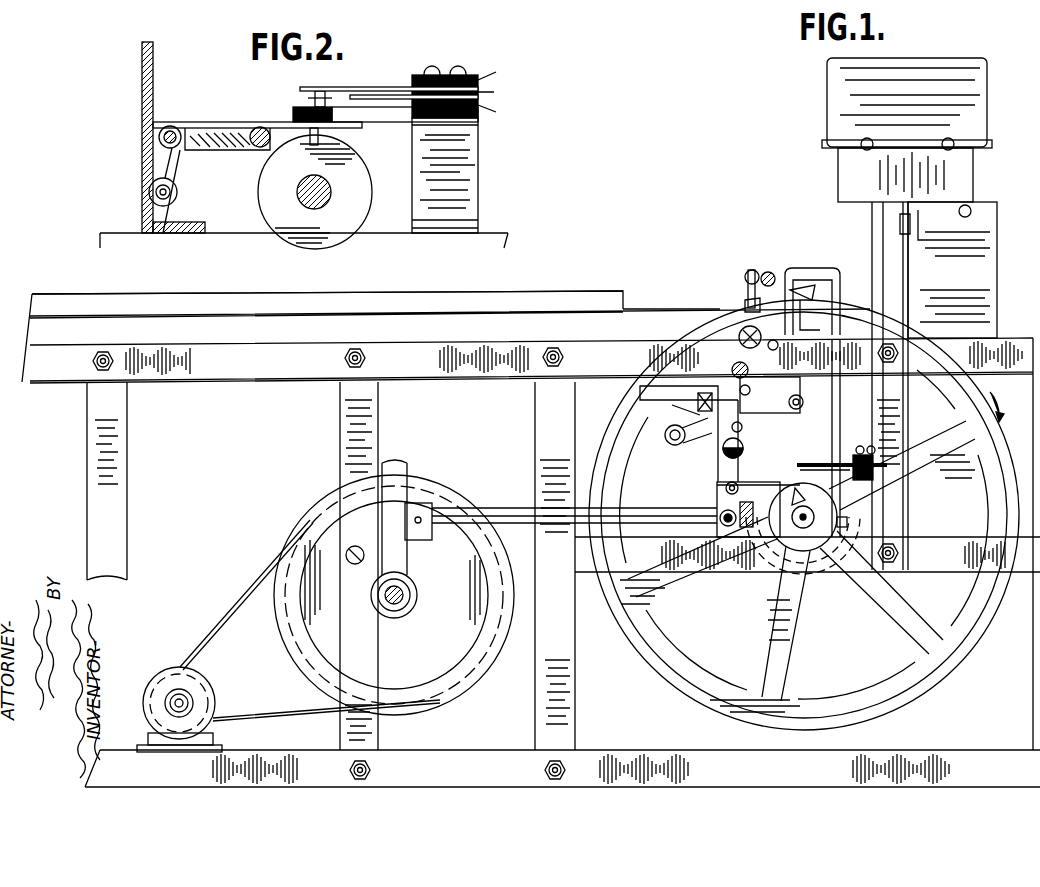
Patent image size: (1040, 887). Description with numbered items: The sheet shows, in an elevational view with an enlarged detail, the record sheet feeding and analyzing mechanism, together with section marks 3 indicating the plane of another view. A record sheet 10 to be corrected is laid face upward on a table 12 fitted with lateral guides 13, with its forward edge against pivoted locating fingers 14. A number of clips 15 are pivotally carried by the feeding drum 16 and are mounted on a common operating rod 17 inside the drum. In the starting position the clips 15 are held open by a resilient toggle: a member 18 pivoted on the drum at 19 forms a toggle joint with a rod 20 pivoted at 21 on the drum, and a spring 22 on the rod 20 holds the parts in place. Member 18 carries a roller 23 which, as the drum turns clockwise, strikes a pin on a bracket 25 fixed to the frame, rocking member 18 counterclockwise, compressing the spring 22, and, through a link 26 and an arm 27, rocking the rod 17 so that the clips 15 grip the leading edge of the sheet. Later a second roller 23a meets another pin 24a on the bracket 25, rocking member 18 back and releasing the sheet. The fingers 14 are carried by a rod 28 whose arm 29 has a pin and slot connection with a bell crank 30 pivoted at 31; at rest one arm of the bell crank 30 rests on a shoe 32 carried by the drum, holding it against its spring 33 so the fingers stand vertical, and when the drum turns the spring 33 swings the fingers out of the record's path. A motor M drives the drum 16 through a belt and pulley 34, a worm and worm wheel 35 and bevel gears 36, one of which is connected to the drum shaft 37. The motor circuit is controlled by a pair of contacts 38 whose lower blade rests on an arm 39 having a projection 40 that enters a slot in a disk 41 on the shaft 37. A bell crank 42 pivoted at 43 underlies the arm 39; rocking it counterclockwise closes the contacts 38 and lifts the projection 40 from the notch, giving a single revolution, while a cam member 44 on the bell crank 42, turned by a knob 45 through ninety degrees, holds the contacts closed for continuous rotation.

In FIG. 1, the section line 3- 3 is at (990, 28).
In FIG. 1, the record sheet 10 is at (660, 318).
In FIG. 1, the table 12 is at (628, 322).
In FIG. 1, the lateral guides 13 is at (516, 296).
In FIG. 1, the locating fingers 14 is at (752, 296).
In FIG. 1, the clips 15 is at (841, 390).
In FIG. 1, the feeding drum 16 is at (790, 631).
In FIG. 1, the operating rod 17 is at (745, 330).
In FIG. 1, the member 18 is at (803, 405).
In FIG. 1, the pivot 19 is at (718, 447).
In FIG. 1, the rod 20 is at (680, 412).
In FIG. 1, the pivot 21 is at (676, 446).
In FIG. 1, the spring 22 is at (665, 432).
In FIG. 1, the roller 23 is at (640, 393).
In FIG. 1, the second roller 23a is at (742, 442).
In FIG. 1, the pin 24a is at (744, 455).
In FIG. 1, the bracket 25 is at (698, 405).
In FIG. 1, the link 26 is at (800, 388).
In FIG. 1, the arm 27 is at (748, 370).
In FIG. 1, the rod 28 is at (752, 270).
In FIG. 1, the arm 29 is at (762, 268).
In FIG. 1, the bell crank 30 is at (812, 290).
In FIG. 1, the pivot 31 is at (810, 270).
In FIG. 1, the shoe 32 is at (843, 308).
In FIG. 1, the spring 33 is at (785, 265).
In FIG. 1, the belt and pulley 34 is at (276, 562).
In FIG. 1, the worm and worm wheel 35 is at (425, 582).
In FIG. 1, the bevel gears 36 is at (803, 563).
In FIG. 2, the shaft 37 is at (331, 192).
In FIG. 1, the shaft 37 is at (798, 522).
In FIG. 2, the contacts 38 is at (323, 98).
In FIG. 1, the contacts 38 is at (858, 452).
In FIG. 2, the arm 39 is at (240, 121).
In FIG. 1, the arm 39 is at (845, 463).
In FIG. 2, the projection 40 is at (345, 128).
In FIG. 1, the projection 40 is at (850, 508).
In FIG. 2, the disk 41 is at (352, 156).
In FIG. 1, the disk 41 is at (835, 520).
In FIG. 2, the bell crank 42 is at (222, 149).
In FIG. 1, the bell crank 42 is at (762, 490).
In FIG. 2, the pivot 43 is at (172, 127).
In FIG. 1, the pivot 43 is at (725, 489).
In FIG. 2, the cam member 44 is at (165, 215).
In FIG. 2, the knob 45 is at (178, 195).
In FIG. 1, the knob 45 is at (717, 512).
In FIG. 1, the motor M is at (163, 688).